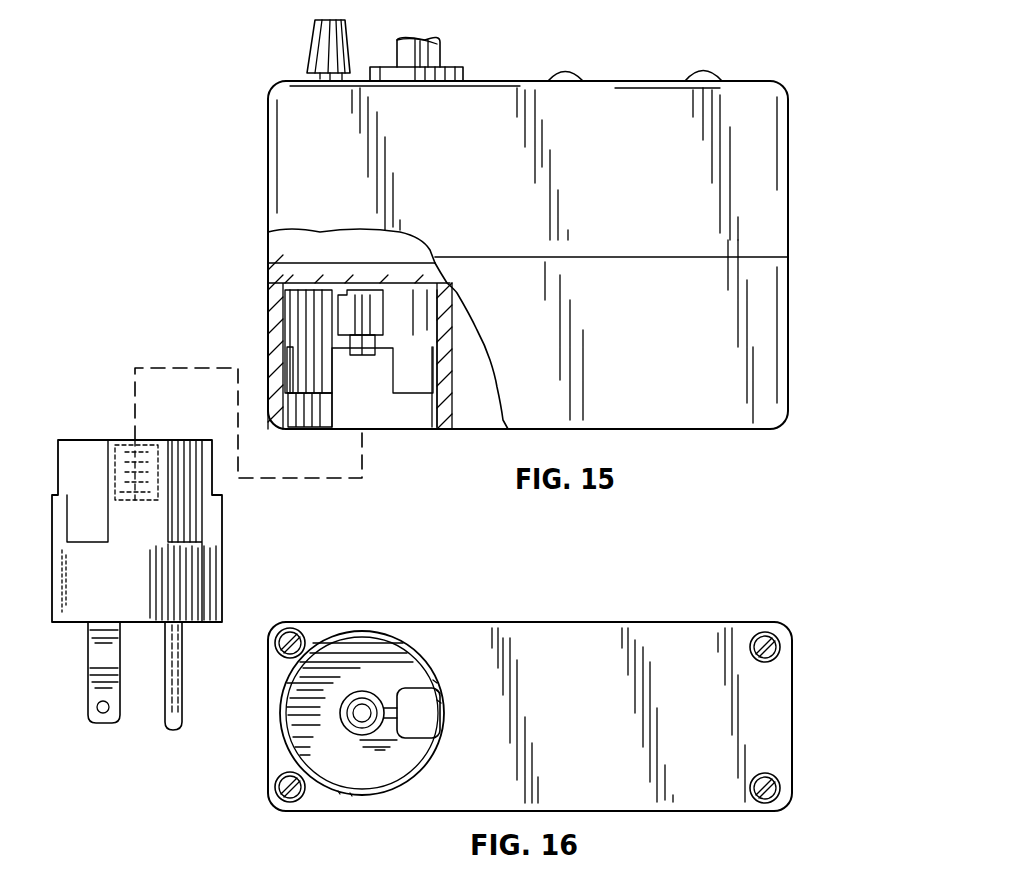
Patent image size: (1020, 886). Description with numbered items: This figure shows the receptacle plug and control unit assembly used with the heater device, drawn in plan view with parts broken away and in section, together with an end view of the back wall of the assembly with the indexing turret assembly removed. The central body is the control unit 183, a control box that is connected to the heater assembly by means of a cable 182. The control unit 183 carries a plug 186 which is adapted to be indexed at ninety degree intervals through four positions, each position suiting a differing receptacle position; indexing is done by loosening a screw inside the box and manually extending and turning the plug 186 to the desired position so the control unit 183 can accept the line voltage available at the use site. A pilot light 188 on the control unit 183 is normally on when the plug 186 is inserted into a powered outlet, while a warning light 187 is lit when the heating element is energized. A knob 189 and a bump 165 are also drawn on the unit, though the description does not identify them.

In FIG. 15, the housing 183 is at (785, 315).
In FIG. 16, the housing 183 is at (793, 716).
In FIG. 15, the adjustment knob 189 is at (317, 50).
In FIG. 15, the switch knob 182 is at (437, 52).
In FIG. 15, the indicator light 187 is at (578, 80).
In FIG. 15, the indicator light 165 is at (660, 85).
In FIG. 15, the top wall 188 is at (717, 73).
In FIG. 15, the plug 186 is at (222, 547).